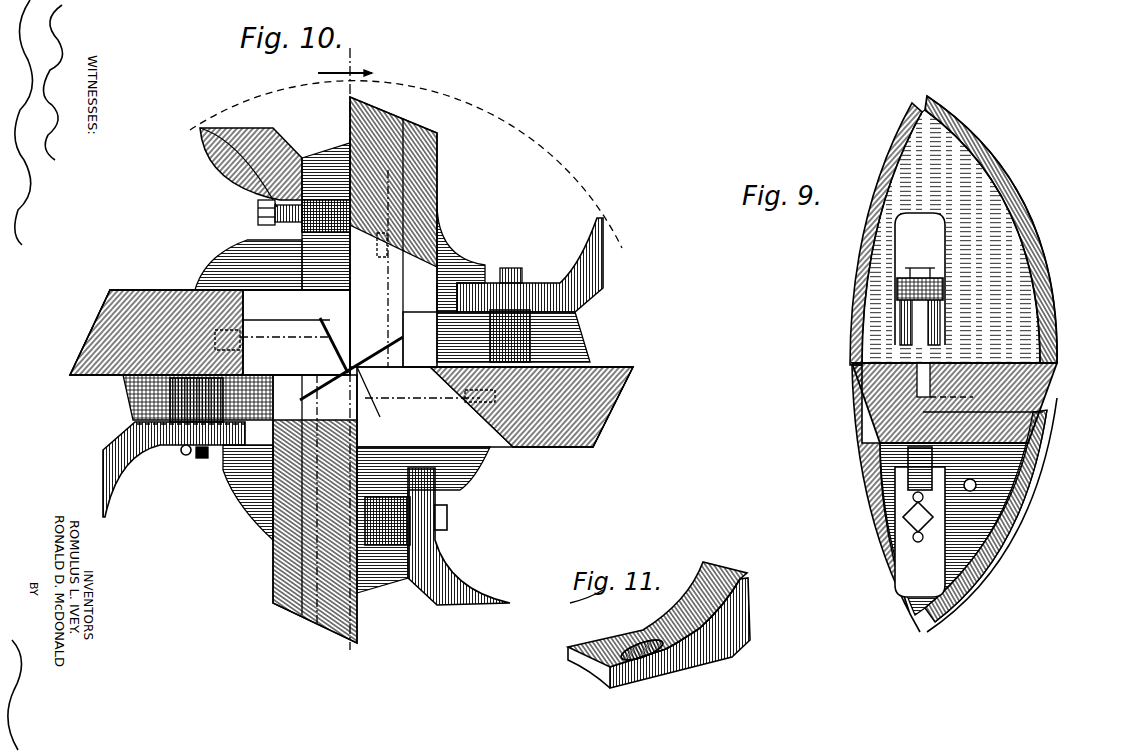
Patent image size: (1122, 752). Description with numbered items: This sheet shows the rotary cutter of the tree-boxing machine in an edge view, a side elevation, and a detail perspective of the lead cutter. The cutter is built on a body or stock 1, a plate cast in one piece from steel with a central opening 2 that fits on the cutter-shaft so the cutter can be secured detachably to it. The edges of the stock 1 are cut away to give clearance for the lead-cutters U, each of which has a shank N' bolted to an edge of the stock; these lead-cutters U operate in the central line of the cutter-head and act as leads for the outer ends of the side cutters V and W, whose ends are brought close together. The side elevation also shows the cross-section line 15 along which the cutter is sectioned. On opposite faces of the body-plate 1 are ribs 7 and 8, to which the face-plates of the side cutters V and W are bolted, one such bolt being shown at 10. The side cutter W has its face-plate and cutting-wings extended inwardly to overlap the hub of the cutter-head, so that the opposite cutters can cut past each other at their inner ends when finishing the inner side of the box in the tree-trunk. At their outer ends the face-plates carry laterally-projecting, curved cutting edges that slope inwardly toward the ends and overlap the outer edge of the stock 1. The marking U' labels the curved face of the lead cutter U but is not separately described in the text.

In FIG. 10, the body or stock 1 is at (462, 248).
In FIG. 9, the body or stock 1 is at (951, 362).
In FIG. 10, the central opening 2 is at (325, 330).
In FIG. 9, the rib 7 is at (1013, 242).
In FIG. 10, the rib 8 is at (143, 300).
In FIG. 9, the rib 8 is at (880, 343).
In FIG. 9, the bolt 10 is at (980, 490).
In FIG. 10, the section line 15 15 is at (345, 349).
In FIG. 10, the lead-cutter U is at (350, 358).
In FIG. 9, the lead-cutter U is at (882, 405).
In FIG. 11, the lead-cutter U is at (659, 601).
In FIG. 10, the curved face of shoe U' is at (227, 167).
In FIG. 10, the side cutter V is at (437, 180).
In FIG. 9, the side cutter V is at (858, 302).
In FIG. 9, the side cutter W is at (1007, 208).
In FIG. 11, the shank N' is at (642, 673).